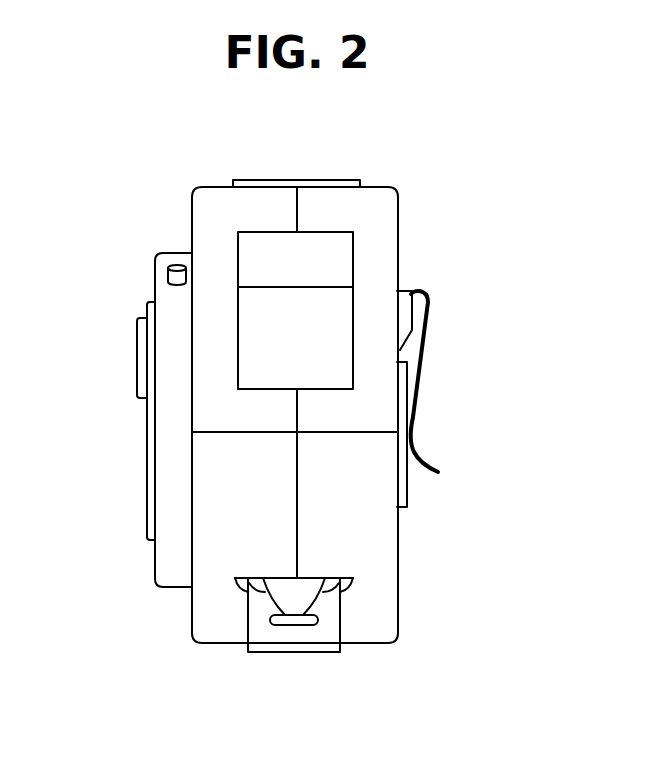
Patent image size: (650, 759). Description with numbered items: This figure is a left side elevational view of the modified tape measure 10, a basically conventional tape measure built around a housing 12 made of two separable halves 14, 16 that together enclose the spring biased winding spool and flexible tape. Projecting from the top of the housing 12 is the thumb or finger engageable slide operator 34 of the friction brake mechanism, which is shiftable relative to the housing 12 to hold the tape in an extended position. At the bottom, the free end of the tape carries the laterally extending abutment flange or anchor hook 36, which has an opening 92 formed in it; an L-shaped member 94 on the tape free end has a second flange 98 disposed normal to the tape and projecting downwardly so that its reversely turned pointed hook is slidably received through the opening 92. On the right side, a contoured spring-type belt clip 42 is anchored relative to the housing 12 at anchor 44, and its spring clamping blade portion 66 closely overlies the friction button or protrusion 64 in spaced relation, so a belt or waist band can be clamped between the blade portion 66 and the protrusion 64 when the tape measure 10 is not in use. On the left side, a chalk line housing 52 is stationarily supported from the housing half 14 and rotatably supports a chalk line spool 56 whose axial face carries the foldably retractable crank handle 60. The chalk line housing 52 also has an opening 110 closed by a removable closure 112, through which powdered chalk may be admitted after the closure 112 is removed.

The tape measure 10 is at (403, 195).
The housing 12 is at (211, 195).
The housing half 14 is at (210, 602).
The housing half 16 is at (398, 587).
The slide operator 34 is at (262, 275).
The abutment flange or anchor hook 36 is at (317, 640).
The belt clip 42 is at (427, 333).
The belt clip anchor 44 is at (412, 290).
The chalk line housing 52 is at (162, 568).
The chalk line spool 56 is at (147, 463).
The crank handle 60 is at (137, 390).
The friction button or protrusion 64 is at (407, 493).
The spring clamping blade portion 66 is at (412, 417).
The opening 92 is at (318, 621).
The L-shaped member 94 is at (283, 613).
The second flange 98 is at (303, 613).
The opening 110 is at (155, 292).
The removable closure 112 is at (171, 263).